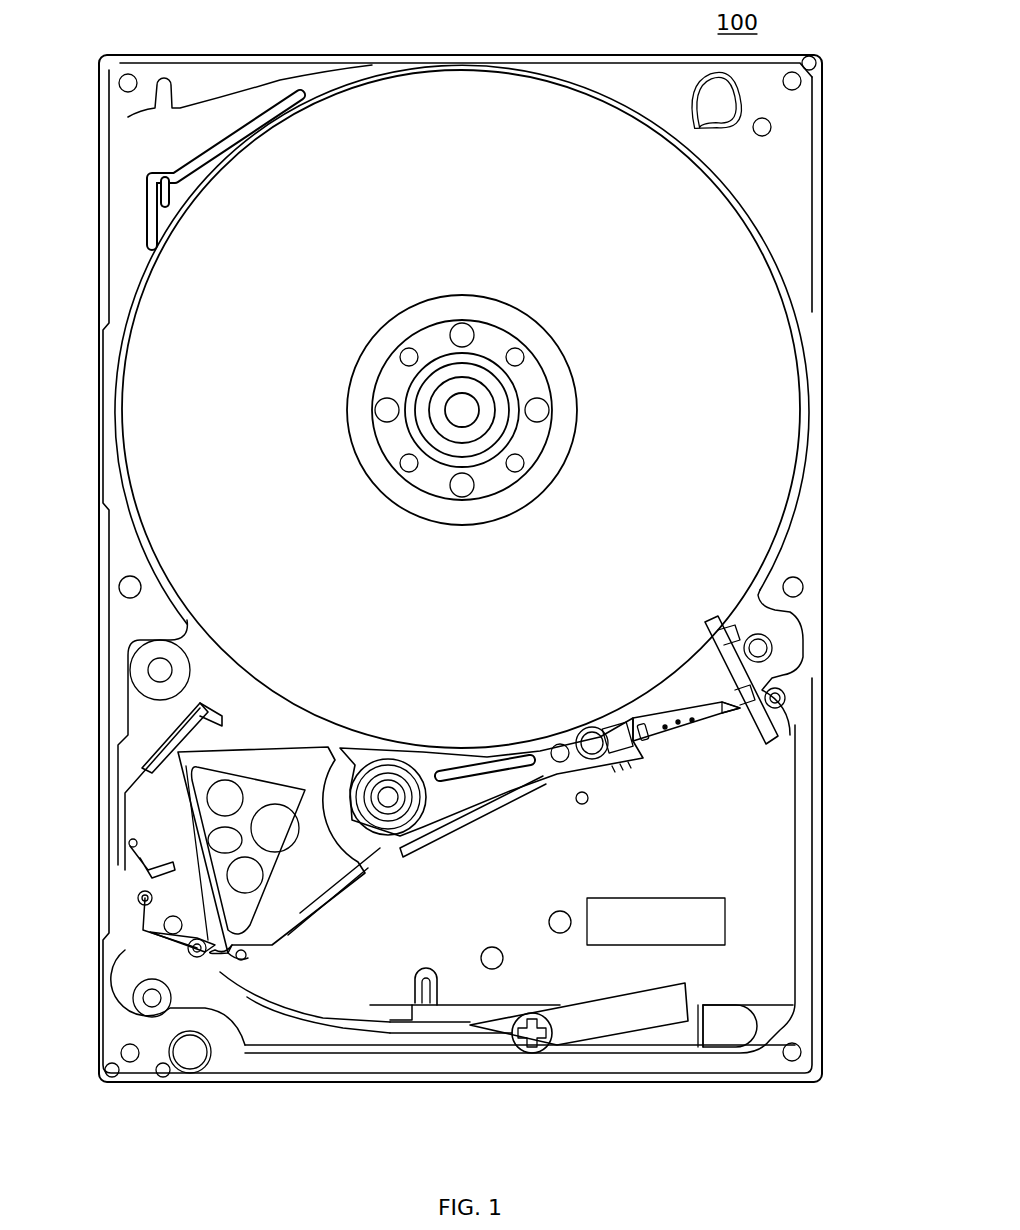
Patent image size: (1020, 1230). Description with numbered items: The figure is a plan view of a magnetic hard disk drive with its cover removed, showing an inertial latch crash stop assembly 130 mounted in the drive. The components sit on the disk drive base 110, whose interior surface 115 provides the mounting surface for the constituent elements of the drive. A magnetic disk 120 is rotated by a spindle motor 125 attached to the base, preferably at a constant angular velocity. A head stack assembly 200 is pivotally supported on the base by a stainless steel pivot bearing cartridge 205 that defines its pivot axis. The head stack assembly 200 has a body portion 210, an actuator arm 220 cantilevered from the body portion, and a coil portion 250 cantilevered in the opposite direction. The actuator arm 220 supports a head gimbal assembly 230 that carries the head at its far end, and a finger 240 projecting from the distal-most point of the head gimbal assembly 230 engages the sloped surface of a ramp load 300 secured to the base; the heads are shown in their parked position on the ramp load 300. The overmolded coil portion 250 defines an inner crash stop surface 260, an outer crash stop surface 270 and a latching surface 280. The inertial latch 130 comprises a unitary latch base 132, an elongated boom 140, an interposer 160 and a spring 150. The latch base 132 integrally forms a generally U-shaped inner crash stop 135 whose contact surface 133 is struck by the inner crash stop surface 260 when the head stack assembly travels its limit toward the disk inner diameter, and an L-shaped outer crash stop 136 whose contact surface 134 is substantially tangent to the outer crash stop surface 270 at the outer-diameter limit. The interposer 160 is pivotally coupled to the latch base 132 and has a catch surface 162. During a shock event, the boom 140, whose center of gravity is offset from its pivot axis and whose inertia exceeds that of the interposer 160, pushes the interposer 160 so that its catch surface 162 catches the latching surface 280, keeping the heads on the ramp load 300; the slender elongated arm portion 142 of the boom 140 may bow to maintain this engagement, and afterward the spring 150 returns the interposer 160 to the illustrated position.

The disk drive base 110 is at (822, 215).
The disk drive base interior surface 115 is at (800, 262).
The magnetic disk 120 is at (773, 383).
The spindle motor 125 is at (528, 440).
The inertial latch crash stop assembly 130 is at (540, 992).
The inertial latch base 132 is at (730, 1018).
The contact surface 133 is at (412, 995).
The contact surface 134 is at (198, 735).
The inner crash stop 135 is at (438, 988).
The outer crash stop 136 is at (205, 710).
The elongated boom 140 is at (603, 1010).
The elongated arm portion 142 is at (385, 1033).
The spring 150 is at (132, 870).
The interposer 160 is at (140, 922).
The catch surface 162 is at (255, 1000).
The head stack assembly 200 is at (564, 808).
The pivot bearing cartridge 205 is at (388, 770).
The body portion 210 is at (435, 815).
The actuator arm 220 is at (545, 750).
The head gimbal assembly 230 is at (665, 745).
The finger 240 is at (736, 725).
The coil portion 250 is at (330, 880).
The inner crash stop surface 260 is at (275, 947).
The outer crash stop surface 270 is at (233, 735).
The latching surface 280 is at (233, 953).
The ramp load 300 is at (770, 730).